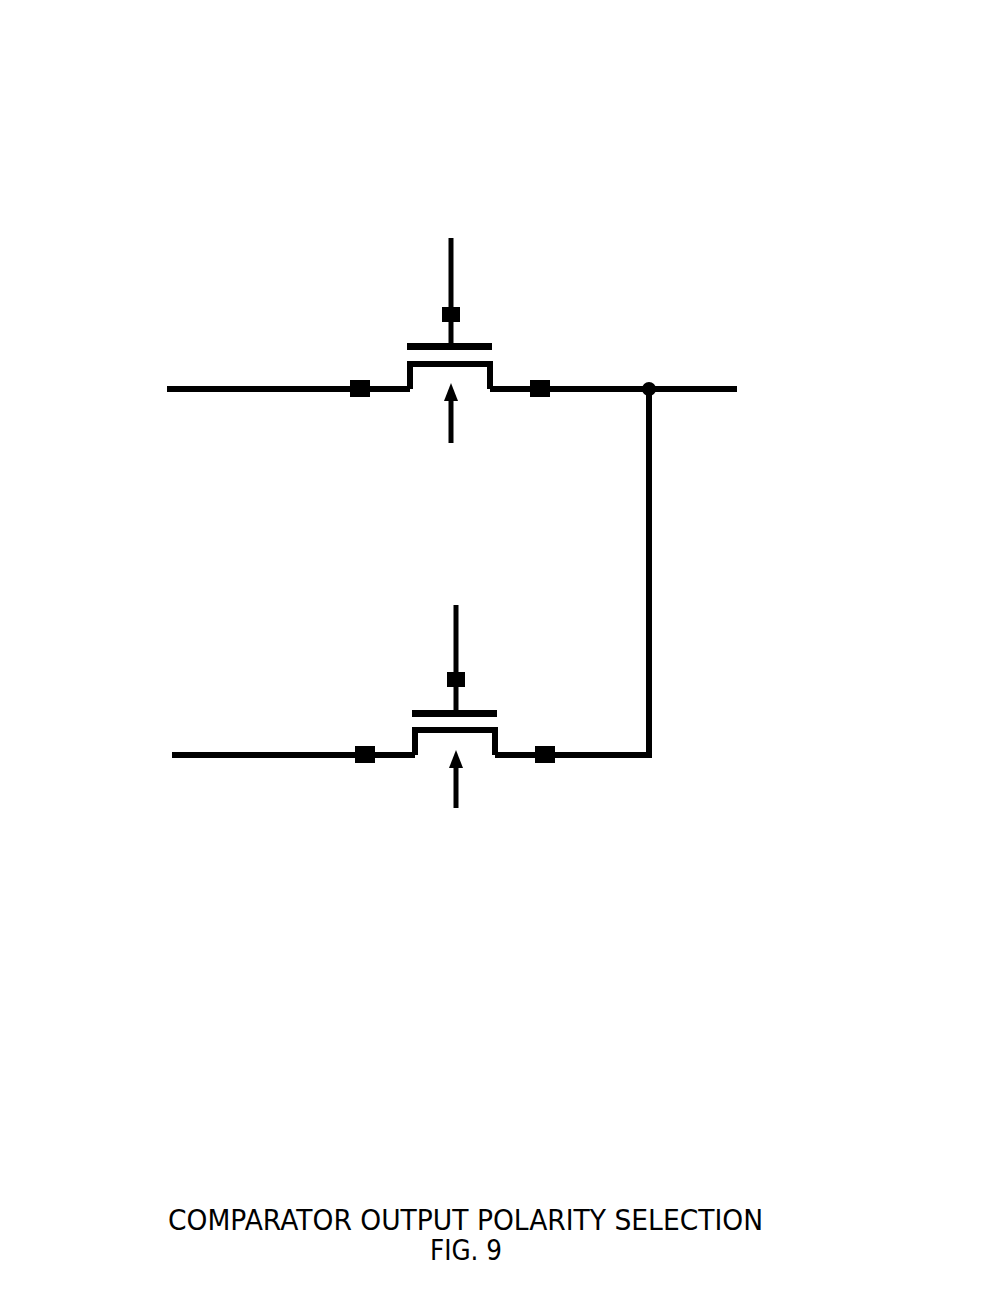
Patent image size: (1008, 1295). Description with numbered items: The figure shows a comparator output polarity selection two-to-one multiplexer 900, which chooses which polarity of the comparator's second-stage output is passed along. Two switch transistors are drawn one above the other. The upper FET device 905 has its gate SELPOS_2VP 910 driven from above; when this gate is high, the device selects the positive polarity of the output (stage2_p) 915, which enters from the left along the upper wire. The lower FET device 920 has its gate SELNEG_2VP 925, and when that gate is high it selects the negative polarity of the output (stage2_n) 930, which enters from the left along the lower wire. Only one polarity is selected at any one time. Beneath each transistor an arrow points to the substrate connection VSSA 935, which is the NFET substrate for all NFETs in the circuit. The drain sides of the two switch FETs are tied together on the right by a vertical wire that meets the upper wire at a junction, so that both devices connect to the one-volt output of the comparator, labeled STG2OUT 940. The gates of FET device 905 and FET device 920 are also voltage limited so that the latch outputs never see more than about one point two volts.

The comparator output polarity selection 2:1 multiplexer 900 is at (50, 29).
The FET device 905 is at (379, 329).
The gate SELPOS_2VP 910 is at (451, 270).
The output (stage2_p) 915 is at (234, 372).
The FET device 920 is at (386, 696).
The gate SELNEG_2VP 925 is at (456, 637).
The output (stage2_n) 930 is at (239, 738).
The VSSA 935 is at (450, 614).
The comparator output STG2OUT_1V 940 is at (706, 555).